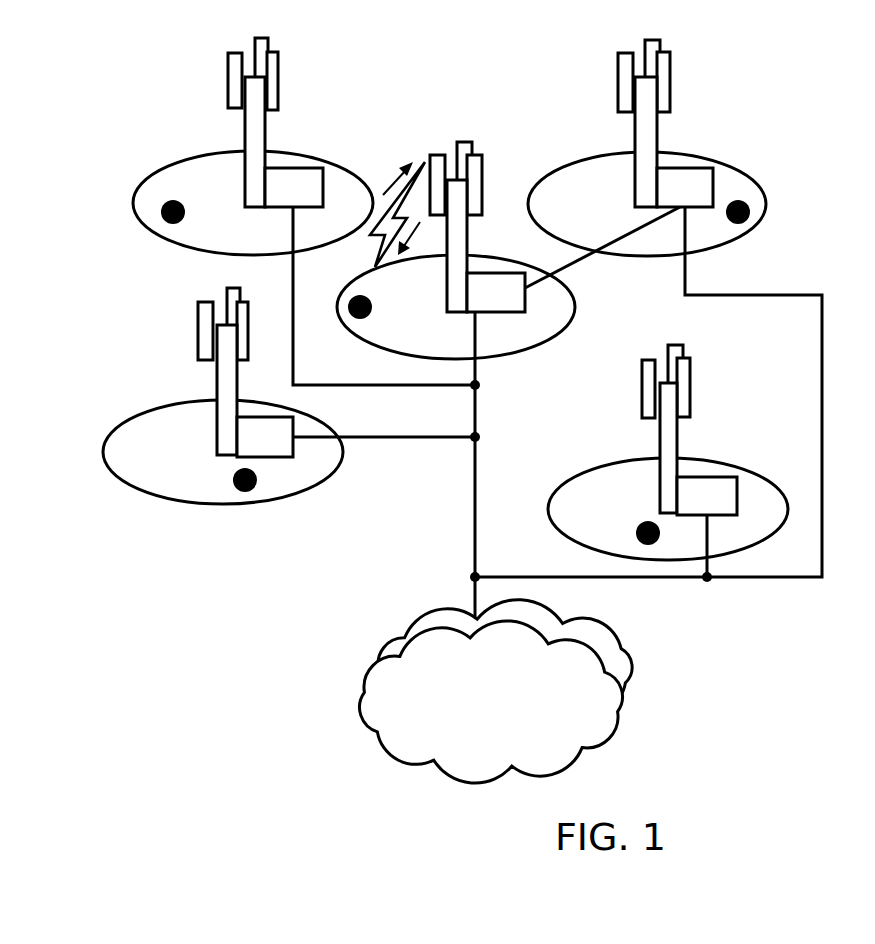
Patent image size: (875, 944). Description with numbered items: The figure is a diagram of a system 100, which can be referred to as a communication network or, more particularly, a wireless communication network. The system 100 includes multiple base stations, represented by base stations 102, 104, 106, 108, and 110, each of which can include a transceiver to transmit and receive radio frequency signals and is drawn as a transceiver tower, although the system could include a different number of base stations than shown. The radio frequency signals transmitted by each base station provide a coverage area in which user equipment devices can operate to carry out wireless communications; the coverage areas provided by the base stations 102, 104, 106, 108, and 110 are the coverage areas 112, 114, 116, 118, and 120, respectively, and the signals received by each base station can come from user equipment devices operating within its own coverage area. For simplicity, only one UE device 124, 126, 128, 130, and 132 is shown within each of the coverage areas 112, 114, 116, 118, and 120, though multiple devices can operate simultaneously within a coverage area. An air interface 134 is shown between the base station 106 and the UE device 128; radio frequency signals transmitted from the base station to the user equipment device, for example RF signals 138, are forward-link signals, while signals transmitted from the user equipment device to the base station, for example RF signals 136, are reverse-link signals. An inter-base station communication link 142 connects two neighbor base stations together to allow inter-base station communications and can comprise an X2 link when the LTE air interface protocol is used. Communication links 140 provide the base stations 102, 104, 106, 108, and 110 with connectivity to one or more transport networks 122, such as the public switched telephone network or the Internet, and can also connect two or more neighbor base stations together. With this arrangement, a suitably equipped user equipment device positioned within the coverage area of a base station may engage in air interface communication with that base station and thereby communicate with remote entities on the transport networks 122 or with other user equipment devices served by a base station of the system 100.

The system 100 is at (222, 613).
The base station 102 is at (293, 167).
The base station 104 is at (685, 168).
The base station 106 is at (493, 272).
The base station 108 is at (262, 417).
The base station 110 is at (707, 477).
The coverage area 112 is at (167, 167).
The coverage area 114 is at (548, 173).
The coverage area 116 is at (547, 345).
The coverage area 118 is at (138, 490).
The coverage area 120 is at (567, 478).
The transport network 122 is at (400, 640).
The UE device 124 is at (170, 224).
The UE device 126 is at (750, 212).
The UE device 128 is at (357, 320).
The UE device 130 is at (243, 493).
The UE device 132 is at (648, 545).
The air interface 134 is at (382, 248).
The RF signals 136 is at (395, 181).
The RF signals 138 is at (421, 226).
The communication links 140 is at (475, 453).
The inter-base station communication link 142 is at (590, 258).